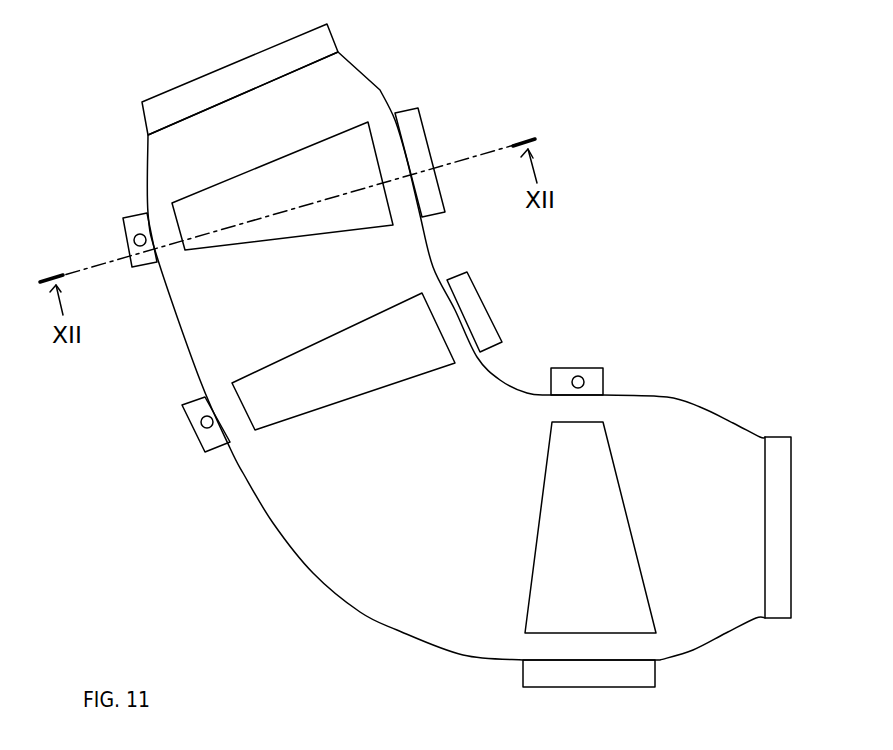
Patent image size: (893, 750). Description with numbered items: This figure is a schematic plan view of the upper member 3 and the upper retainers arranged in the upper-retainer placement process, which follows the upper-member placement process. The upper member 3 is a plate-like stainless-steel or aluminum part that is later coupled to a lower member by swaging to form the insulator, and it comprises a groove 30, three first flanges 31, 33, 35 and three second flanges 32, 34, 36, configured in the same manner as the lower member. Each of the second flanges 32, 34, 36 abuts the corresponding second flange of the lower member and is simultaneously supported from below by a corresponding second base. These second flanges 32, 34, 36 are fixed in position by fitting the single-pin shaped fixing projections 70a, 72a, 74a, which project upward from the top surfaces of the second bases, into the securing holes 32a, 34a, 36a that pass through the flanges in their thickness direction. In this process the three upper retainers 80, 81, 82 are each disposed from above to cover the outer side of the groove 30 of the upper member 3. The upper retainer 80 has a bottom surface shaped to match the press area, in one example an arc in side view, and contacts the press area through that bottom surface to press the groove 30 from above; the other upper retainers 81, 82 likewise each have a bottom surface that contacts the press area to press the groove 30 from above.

The upper member 3 is at (386, 52).
The groove 30 is at (163, 152).
The first flange 31 is at (417, 143).
The second flange 32 is at (135, 217).
The securing hole 32a is at (128, 238).
The first flange 33 is at (473, 305).
The second flange 34 is at (202, 438).
The securing hole 34a is at (198, 415).
The first flange 35 is at (640, 675).
The second flange 36 is at (592, 378).
The securing hole 36a is at (580, 372).
The fixing projection 70a is at (137, 227).
The fixing projection 72a is at (200, 407).
The fixing projection 74a is at (577, 378).
The upper retainer 80 is at (320, 153).
The upper retainer 81 is at (367, 330).
The upper retainer 82 is at (592, 475).